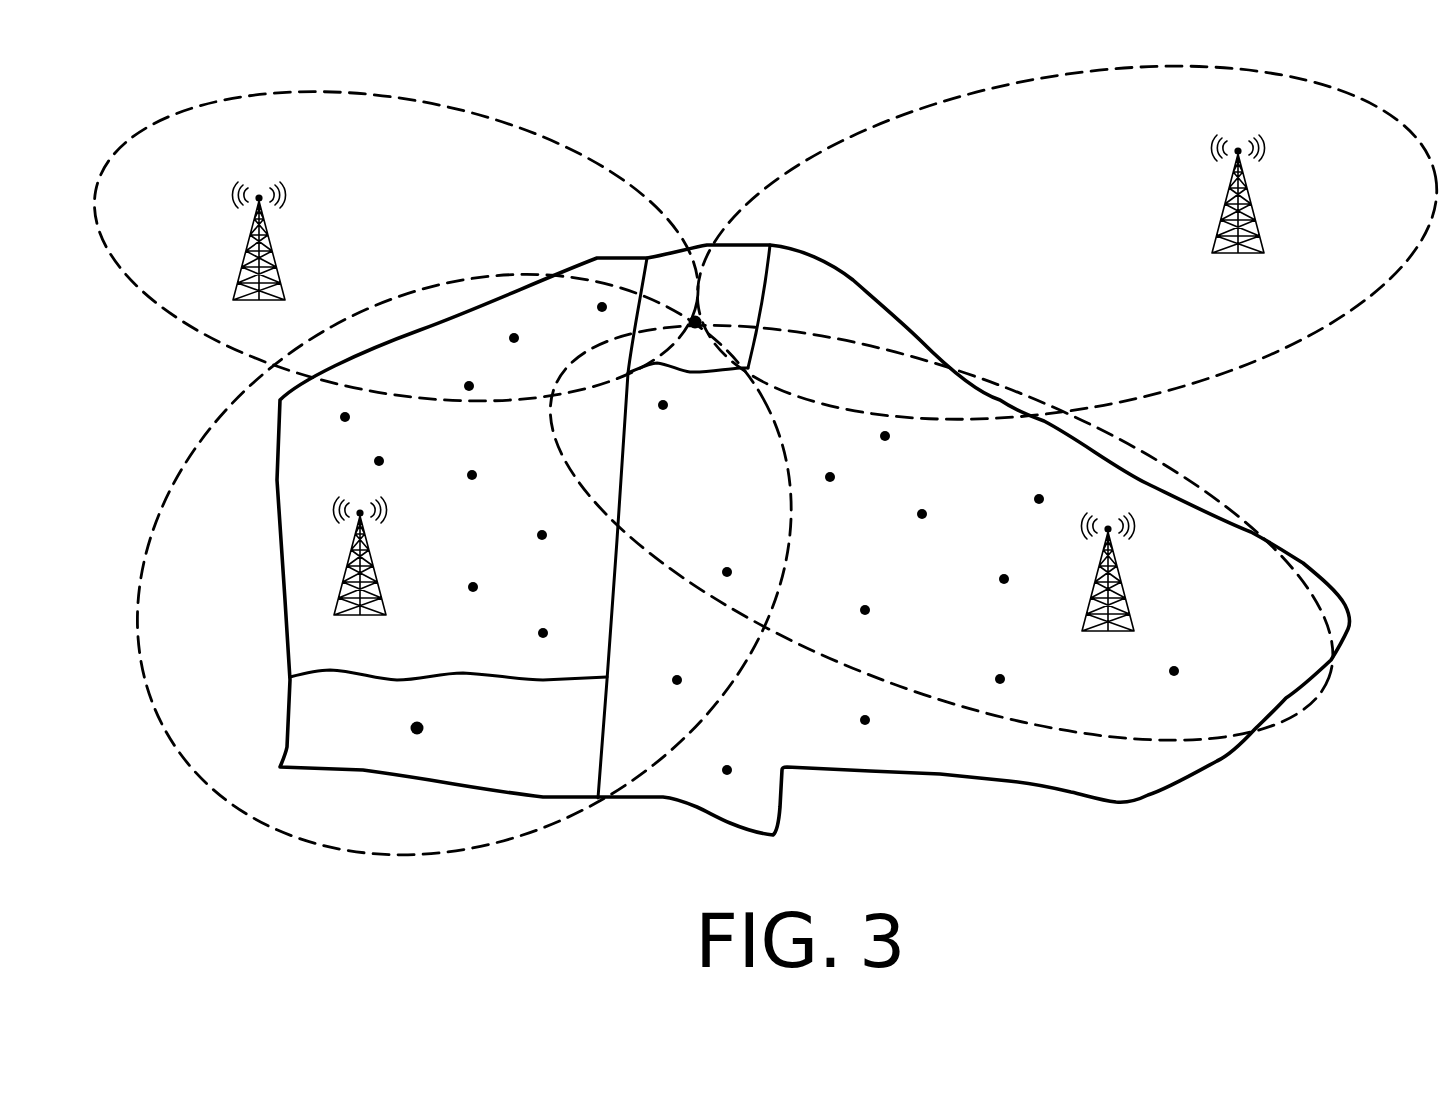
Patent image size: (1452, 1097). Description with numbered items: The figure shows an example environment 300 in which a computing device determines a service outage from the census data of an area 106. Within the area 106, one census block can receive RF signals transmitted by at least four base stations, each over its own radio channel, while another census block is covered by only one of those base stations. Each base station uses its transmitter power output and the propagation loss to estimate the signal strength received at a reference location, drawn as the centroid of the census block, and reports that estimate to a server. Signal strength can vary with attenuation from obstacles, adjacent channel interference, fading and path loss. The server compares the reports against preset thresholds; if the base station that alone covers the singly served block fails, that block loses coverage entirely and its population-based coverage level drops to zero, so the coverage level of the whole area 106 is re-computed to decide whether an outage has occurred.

The example environment 300 is at (137, 86).
The area 106 is at (1258, 726).